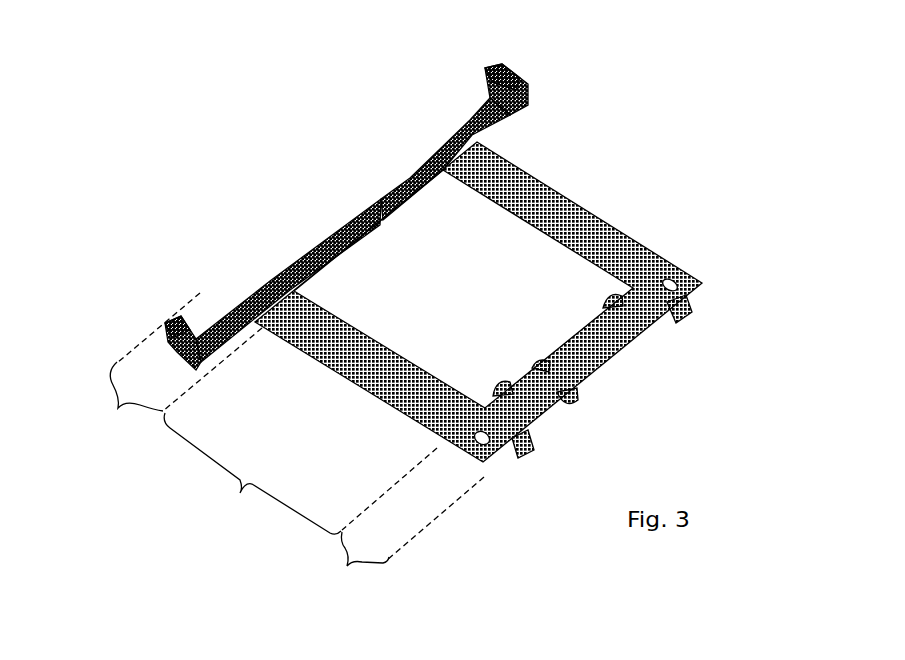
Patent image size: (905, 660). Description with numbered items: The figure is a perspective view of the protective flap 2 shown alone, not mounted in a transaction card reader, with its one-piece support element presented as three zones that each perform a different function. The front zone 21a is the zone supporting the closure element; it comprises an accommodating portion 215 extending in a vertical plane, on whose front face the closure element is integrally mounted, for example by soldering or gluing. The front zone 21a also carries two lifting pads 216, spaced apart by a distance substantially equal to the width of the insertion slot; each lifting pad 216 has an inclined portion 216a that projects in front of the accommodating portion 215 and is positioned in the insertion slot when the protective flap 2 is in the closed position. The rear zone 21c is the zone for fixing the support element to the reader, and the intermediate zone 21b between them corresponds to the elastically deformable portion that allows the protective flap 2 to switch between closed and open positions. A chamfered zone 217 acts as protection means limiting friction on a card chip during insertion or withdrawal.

The protective flap 2 is at (252, 166).
The accommodating portion 215 is at (409, 197).
The lifting pad 216 is at (486, 70).
The inclined portion 216a is at (487, 86).
The chamfered zone 217 is at (351, 250).
The front zone 21a is at (177, 366).
The intermediate zone 21b is at (300, 473).
The rear zone 21c is at (402, 537).